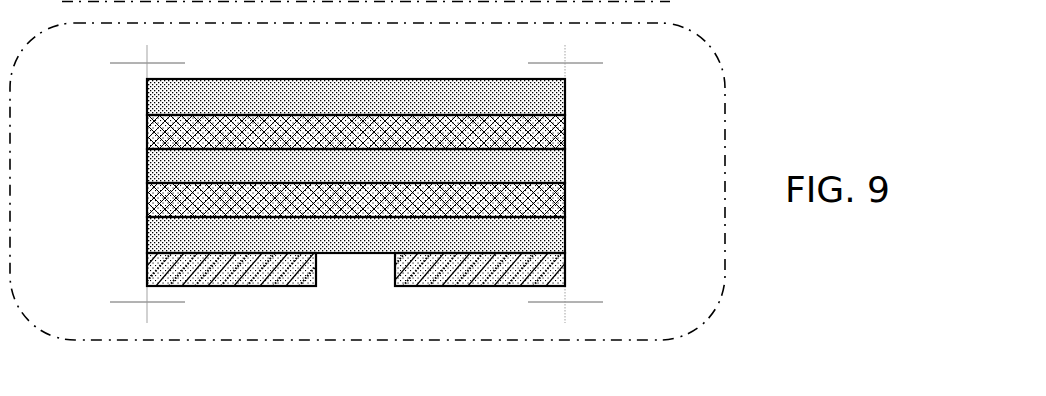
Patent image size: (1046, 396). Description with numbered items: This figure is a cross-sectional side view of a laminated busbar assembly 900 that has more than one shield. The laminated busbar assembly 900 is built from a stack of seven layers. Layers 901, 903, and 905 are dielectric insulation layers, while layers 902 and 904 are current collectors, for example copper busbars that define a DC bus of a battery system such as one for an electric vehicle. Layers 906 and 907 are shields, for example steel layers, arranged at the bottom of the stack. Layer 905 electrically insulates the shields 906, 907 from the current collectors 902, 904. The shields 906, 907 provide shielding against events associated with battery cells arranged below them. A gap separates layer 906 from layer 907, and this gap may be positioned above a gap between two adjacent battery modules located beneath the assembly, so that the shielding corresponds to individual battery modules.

The laminated busbar assembly 900 is at (340, 66).
The dielectric insulation layer 901 is at (567, 103).
The current collector layer 902 is at (567, 146).
The dielectric insulation layer 903 is at (567, 178).
The current collector layer 904 is at (567, 209).
The dielectric insulation layer 905 is at (567, 246).
The shield layer 906 is at (567, 279).
The shield layer 907 is at (147, 262).